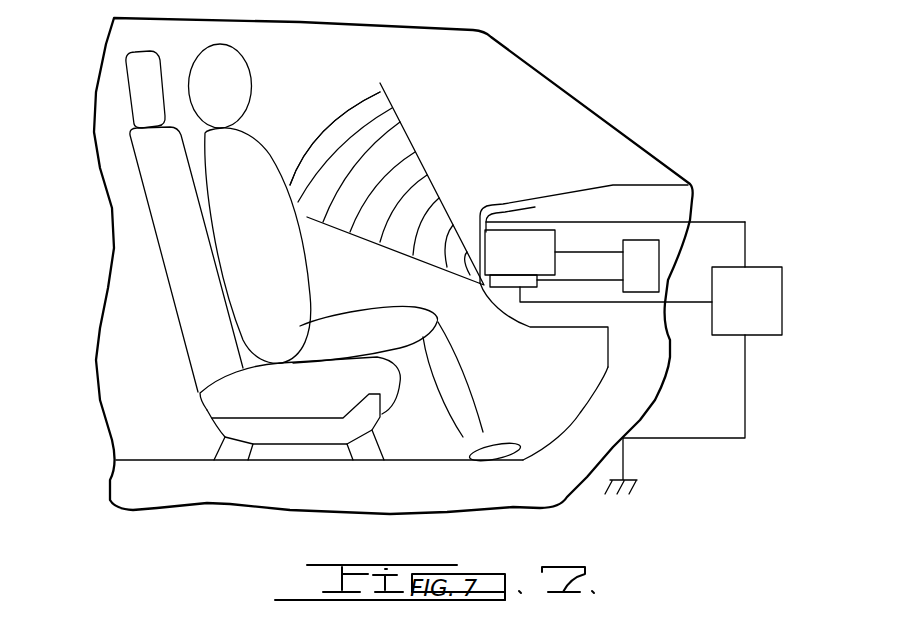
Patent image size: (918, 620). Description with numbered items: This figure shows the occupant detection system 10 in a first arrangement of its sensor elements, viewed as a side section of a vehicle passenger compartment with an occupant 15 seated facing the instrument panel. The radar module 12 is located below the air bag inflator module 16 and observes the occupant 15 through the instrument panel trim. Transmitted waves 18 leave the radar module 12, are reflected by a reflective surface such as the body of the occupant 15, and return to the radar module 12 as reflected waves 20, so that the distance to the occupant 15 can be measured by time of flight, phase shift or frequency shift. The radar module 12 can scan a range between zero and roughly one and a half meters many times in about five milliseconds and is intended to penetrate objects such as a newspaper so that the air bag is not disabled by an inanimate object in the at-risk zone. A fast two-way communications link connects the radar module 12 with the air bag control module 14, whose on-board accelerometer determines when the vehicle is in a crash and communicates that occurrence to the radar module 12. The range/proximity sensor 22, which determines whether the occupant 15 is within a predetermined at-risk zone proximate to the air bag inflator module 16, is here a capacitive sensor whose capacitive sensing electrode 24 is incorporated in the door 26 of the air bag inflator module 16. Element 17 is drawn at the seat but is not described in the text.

The occupant detection system 10 is at (675, 95).
The radar module 12 is at (510, 297).
The air bag control module 14 is at (657, 248).
The occupant 15 is at (252, 72).
The air bag inflator module 16 is at (560, 240).
The vehicle seat 17 is at (133, 168).
The transmitted waves 18 is at (310, 153).
The reflected waves 20 is at (388, 108).
The range/proximity sensor 22 is at (768, 325).
The capacitive sensing electrode 24 is at (510, 213).
The door 26 is at (480, 210).